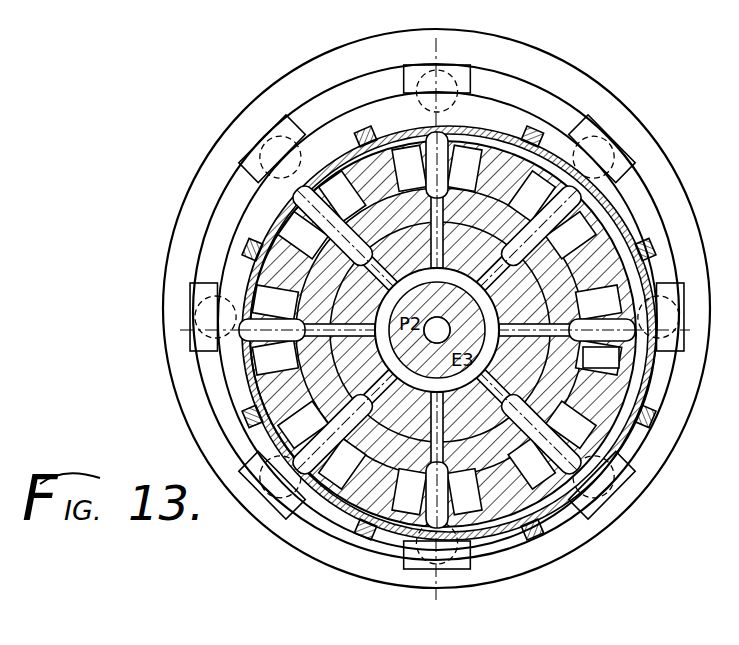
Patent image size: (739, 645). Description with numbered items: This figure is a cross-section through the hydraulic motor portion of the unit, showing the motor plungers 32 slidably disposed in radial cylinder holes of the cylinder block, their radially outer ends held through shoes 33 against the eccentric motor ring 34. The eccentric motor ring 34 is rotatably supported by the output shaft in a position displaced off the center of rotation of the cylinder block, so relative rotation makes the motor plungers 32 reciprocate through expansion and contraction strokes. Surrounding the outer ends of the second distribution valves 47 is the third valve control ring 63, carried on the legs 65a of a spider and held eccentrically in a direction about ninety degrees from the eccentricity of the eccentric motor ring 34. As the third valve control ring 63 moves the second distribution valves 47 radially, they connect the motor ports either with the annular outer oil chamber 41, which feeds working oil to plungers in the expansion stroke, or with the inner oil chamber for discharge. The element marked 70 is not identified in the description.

The eccentric motor ring 34 is at (510, 60).
The motor plungers 32 is at (415, 103).
The shoes 33 is at (467, 93).
The third valve control ring 63 is at (623, 190).
The legs 65a is at (353, 115).
The second distribution valves 47 is at (297, 477).
The annular outer oil chamber 41 is at (436, 329).
The stop member 70 is at (578, 310).